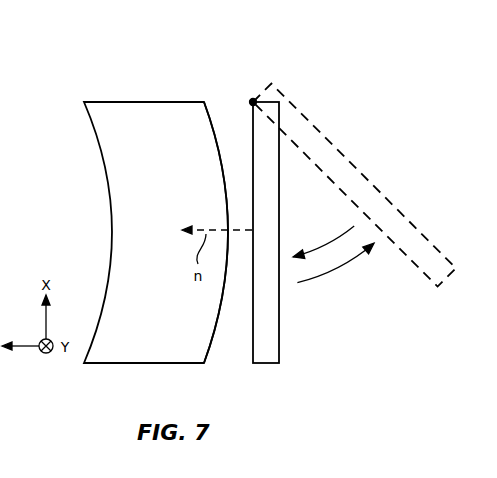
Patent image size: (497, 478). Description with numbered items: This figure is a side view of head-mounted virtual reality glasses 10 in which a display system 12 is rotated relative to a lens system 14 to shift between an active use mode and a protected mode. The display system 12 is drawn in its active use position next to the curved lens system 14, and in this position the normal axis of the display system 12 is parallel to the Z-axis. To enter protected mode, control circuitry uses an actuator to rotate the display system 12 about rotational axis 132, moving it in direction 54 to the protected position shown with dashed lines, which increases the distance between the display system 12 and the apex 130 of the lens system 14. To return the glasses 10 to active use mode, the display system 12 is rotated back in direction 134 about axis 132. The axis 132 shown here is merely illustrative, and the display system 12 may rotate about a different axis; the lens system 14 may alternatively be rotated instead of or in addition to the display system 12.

The virtual reality glasses 10 is at (344, 83).
The display system 12 is at (279, 343).
The lens system 14 is at (155, 101).
The direction 54 is at (342, 270).
The apex 130 is at (229, 218).
The rotational axis 132 is at (254, 99).
The direction 134 is at (332, 246).